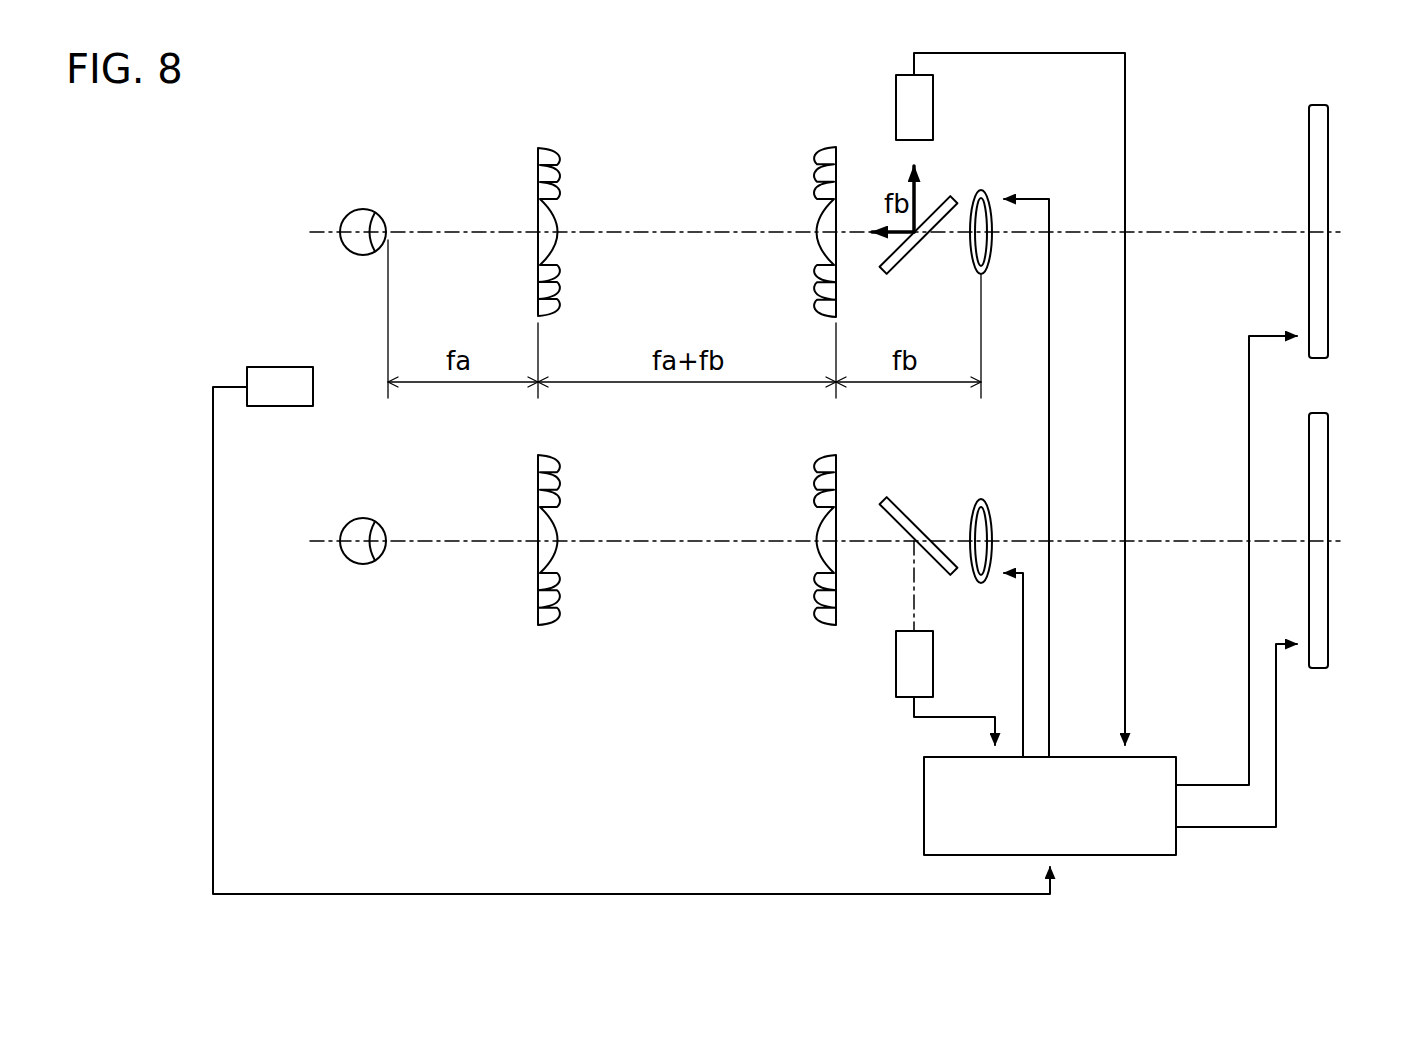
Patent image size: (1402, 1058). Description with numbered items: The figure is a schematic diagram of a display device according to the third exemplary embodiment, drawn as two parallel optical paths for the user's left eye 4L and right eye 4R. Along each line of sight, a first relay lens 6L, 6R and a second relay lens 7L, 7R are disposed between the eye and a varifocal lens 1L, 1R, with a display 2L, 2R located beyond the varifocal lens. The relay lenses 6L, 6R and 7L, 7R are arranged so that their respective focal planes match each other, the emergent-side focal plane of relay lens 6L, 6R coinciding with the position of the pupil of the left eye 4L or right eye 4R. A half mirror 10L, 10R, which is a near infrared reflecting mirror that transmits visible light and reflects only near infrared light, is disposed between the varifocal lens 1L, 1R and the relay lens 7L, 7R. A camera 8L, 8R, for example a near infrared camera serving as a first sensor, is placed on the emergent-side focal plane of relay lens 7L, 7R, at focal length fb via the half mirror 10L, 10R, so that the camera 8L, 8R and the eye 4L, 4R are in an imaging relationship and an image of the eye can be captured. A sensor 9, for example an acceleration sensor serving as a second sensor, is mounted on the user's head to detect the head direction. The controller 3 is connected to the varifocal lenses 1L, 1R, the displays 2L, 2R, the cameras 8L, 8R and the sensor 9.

The varifocal lens 1L is at (989, 266).
The varifocal lens 1R is at (990, 506).
The display 2L is at (1328, 280).
The display 2R is at (1328, 605).
The controller 3 is at (924, 813).
The left eye 4L is at (352, 212).
The right eye 4R is at (352, 521).
The relay lens 6L is at (538, 152).
The relay lens 6R is at (538, 601).
The relay lens 7L is at (819, 156).
The relay lens 7R is at (817, 614).
The camera 8L is at (896, 99).
The camera 8R is at (896, 684).
The sensor 9 is at (280, 367).
The half mirror 10L is at (951, 201).
The half mirror 10R is at (950, 570).